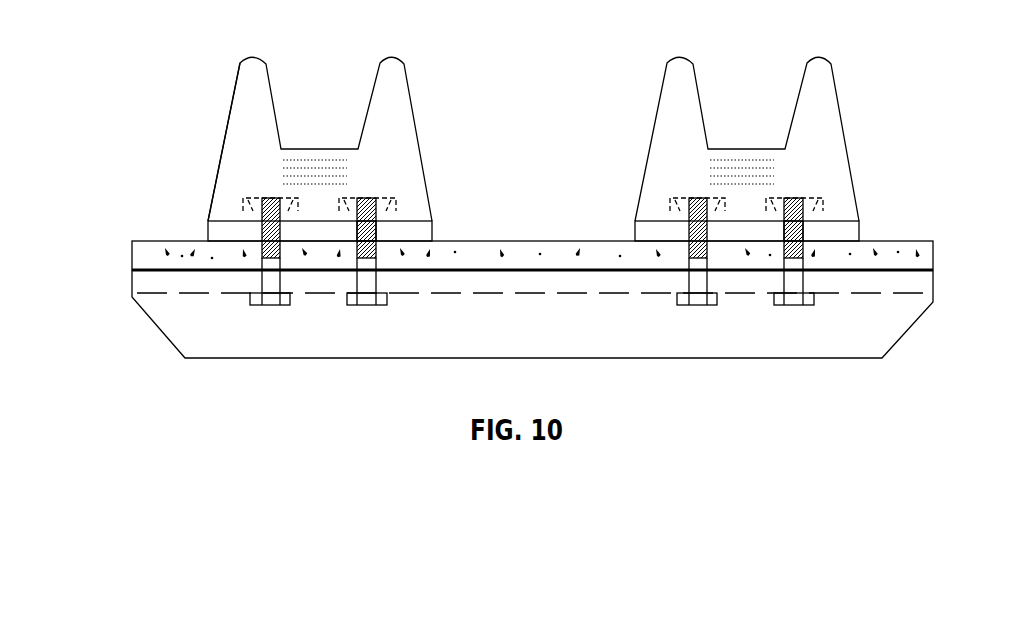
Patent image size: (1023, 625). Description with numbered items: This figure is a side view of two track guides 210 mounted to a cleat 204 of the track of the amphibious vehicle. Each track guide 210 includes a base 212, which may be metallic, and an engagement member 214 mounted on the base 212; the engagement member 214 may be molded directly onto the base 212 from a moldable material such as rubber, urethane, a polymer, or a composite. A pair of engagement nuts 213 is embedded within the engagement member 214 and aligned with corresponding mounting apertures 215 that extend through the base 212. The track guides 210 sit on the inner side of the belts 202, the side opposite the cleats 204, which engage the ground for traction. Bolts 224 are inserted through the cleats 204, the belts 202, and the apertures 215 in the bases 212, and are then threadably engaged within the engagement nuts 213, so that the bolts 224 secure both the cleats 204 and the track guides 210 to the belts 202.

The belts 202 is at (131, 241).
The engagement cleats 204 is at (129, 318).
The track guides 210 is at (224, 112).
The base 212 is at (207, 230).
The engagement nuts 213 is at (378, 196).
The engagement member 214 is at (218, 158).
The mounting apertures 215 is at (376, 232).
The bolts 224 is at (350, 306).